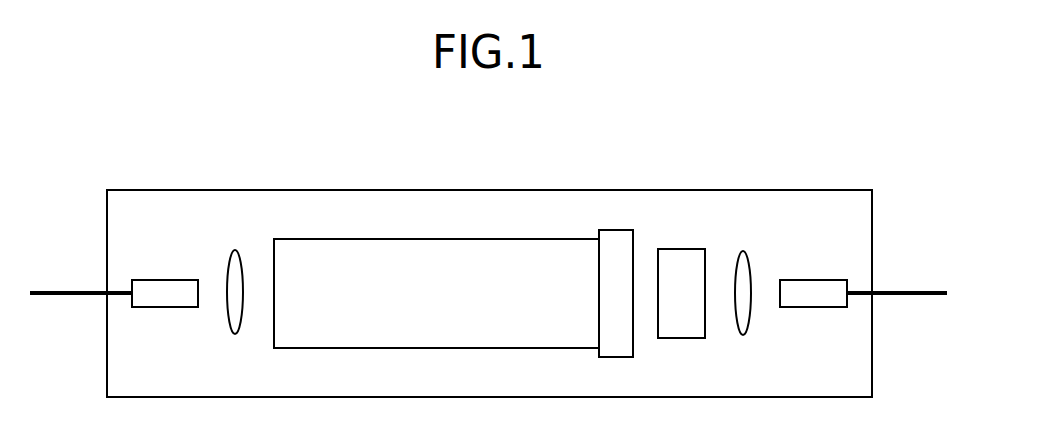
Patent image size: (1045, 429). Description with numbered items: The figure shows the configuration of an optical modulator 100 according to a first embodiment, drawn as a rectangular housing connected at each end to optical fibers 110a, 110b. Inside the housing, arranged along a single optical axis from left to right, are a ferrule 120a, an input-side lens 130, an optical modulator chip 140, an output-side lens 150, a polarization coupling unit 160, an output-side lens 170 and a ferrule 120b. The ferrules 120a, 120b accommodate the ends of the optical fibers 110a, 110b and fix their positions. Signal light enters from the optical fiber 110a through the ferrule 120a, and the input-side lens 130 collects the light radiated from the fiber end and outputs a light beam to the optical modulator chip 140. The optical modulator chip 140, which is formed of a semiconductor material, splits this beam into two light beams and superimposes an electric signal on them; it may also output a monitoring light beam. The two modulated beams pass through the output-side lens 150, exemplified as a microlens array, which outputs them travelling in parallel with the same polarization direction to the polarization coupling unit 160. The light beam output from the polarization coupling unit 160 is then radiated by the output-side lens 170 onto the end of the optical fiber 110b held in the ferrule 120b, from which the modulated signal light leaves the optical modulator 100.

The optical modulator 100 is at (823, 190).
The optical fiber 110a is at (58, 291).
The optical fiber 110b is at (916, 291).
The ferrule 120a is at (163, 280).
The ferrule 120b is at (810, 280).
The input-side lens 130 is at (235, 250).
The optical modulator chip 140 is at (523, 239).
The output-side lens 150 is at (616, 230).
The polarization coupling unit 160 is at (681, 249).
The output-side lens 170 is at (743, 252).